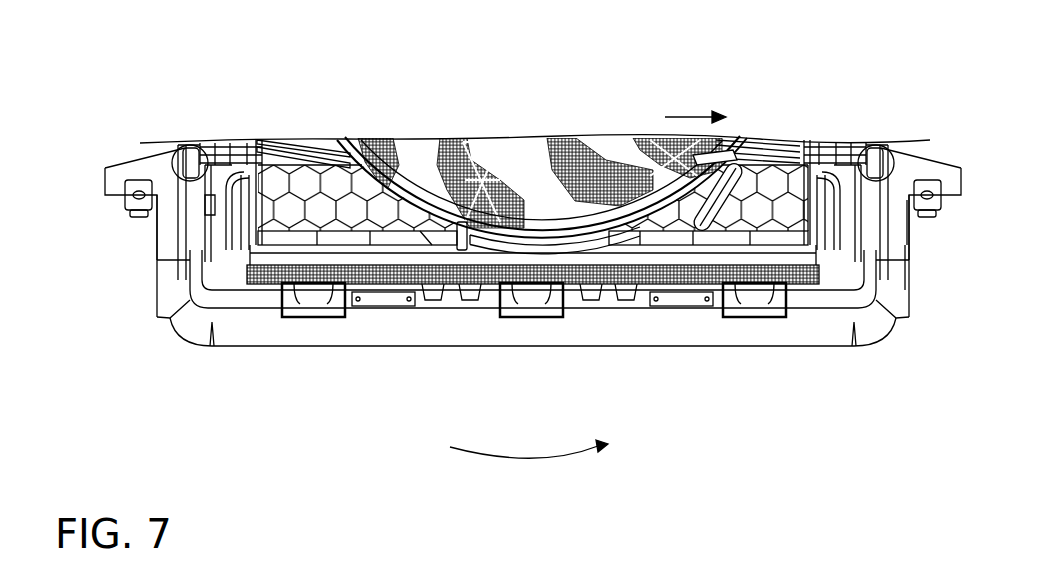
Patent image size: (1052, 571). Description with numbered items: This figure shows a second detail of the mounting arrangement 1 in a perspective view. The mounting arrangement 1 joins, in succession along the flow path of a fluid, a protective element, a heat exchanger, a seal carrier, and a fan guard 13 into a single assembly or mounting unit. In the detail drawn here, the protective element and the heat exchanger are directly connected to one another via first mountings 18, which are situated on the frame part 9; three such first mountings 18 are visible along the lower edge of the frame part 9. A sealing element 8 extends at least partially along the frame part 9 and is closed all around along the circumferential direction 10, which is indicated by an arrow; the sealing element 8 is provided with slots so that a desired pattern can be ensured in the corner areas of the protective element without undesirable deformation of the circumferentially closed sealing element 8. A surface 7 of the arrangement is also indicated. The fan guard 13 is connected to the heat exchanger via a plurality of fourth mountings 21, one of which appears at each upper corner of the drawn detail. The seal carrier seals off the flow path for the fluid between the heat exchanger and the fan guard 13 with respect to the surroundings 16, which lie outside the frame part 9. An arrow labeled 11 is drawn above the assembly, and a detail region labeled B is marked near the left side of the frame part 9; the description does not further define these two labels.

The mounting arrangement 1 is at (855, 123).
The surface 7 is at (603, 245).
The sealing element 8 is at (430, 327).
The frame part 9 is at (358, 299).
The circumferential direction 10 is at (537, 456).
The air flow direction 11 is at (690, 117).
The fan guard 13 is at (308, 167).
The surroundings 16 is at (972, 268).
The first mountings 18 is at (310, 317).
The fourth mountings 21 is at (168, 154).
The detail section B is at (233, 207).